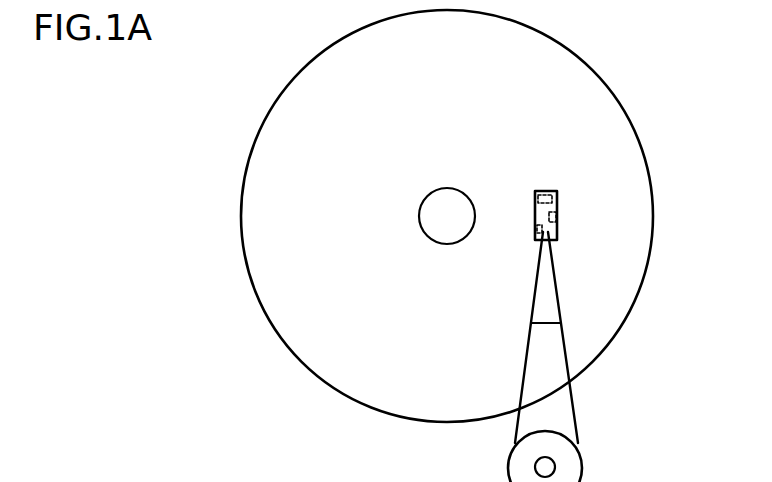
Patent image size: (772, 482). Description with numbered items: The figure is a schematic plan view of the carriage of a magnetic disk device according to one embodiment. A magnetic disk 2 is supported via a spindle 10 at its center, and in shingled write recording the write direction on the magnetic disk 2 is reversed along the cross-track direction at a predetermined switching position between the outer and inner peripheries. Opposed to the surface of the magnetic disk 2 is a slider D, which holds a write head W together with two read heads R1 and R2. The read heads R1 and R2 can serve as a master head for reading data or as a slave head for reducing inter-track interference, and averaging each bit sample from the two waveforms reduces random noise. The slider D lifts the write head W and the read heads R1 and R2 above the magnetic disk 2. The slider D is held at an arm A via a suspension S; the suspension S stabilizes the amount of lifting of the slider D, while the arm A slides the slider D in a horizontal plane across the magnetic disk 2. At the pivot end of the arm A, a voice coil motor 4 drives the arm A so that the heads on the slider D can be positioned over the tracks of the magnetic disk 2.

The magnetic disk 2 is at (643, 150).
The spindle 10 is at (419, 216).
The slider D is at (542, 191).
The write head W is at (536, 203).
The read head R1 is at (557, 213).
The read head R2 is at (537, 229).
The suspension S is at (557, 290).
The arm A is at (573, 423).
The voice coil motor 4 is at (582, 467).